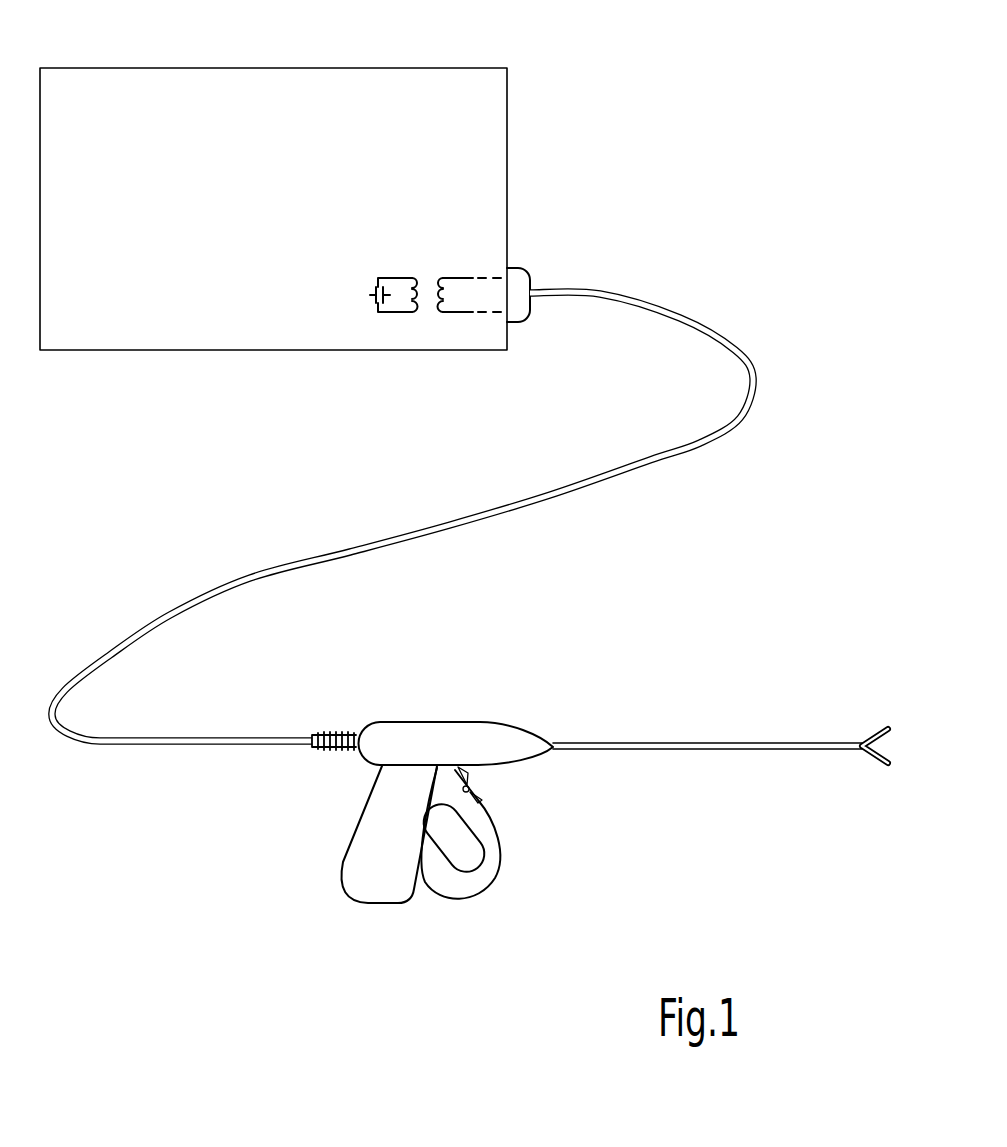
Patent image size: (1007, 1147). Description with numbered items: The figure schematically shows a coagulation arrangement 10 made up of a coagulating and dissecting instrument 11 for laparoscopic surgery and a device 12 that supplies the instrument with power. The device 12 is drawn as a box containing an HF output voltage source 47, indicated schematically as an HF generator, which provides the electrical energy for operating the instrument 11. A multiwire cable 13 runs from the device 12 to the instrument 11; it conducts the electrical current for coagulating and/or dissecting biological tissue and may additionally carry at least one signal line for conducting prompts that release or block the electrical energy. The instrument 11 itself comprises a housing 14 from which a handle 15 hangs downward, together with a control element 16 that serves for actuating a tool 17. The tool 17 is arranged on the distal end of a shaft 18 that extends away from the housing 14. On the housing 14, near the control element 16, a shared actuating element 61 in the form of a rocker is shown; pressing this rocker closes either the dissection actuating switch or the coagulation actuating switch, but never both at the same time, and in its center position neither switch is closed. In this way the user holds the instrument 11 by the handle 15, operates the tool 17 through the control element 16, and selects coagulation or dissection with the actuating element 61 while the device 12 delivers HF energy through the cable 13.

The coagulation arrangement 10 is at (750, 115).
The coagulating and dissecting instrument 11 is at (530, 670).
The device 12 is at (323, 214).
The multiwire cable 13 is at (757, 388).
The housing 14 is at (487, 737).
The handle 15 is at (383, 890).
The control element 16 is at (480, 885).
The tool 17 is at (898, 715).
The shaft 18 is at (688, 740).
The HF output voltage source 47 is at (433, 259).
The shared actuating element 61 is at (475, 782).